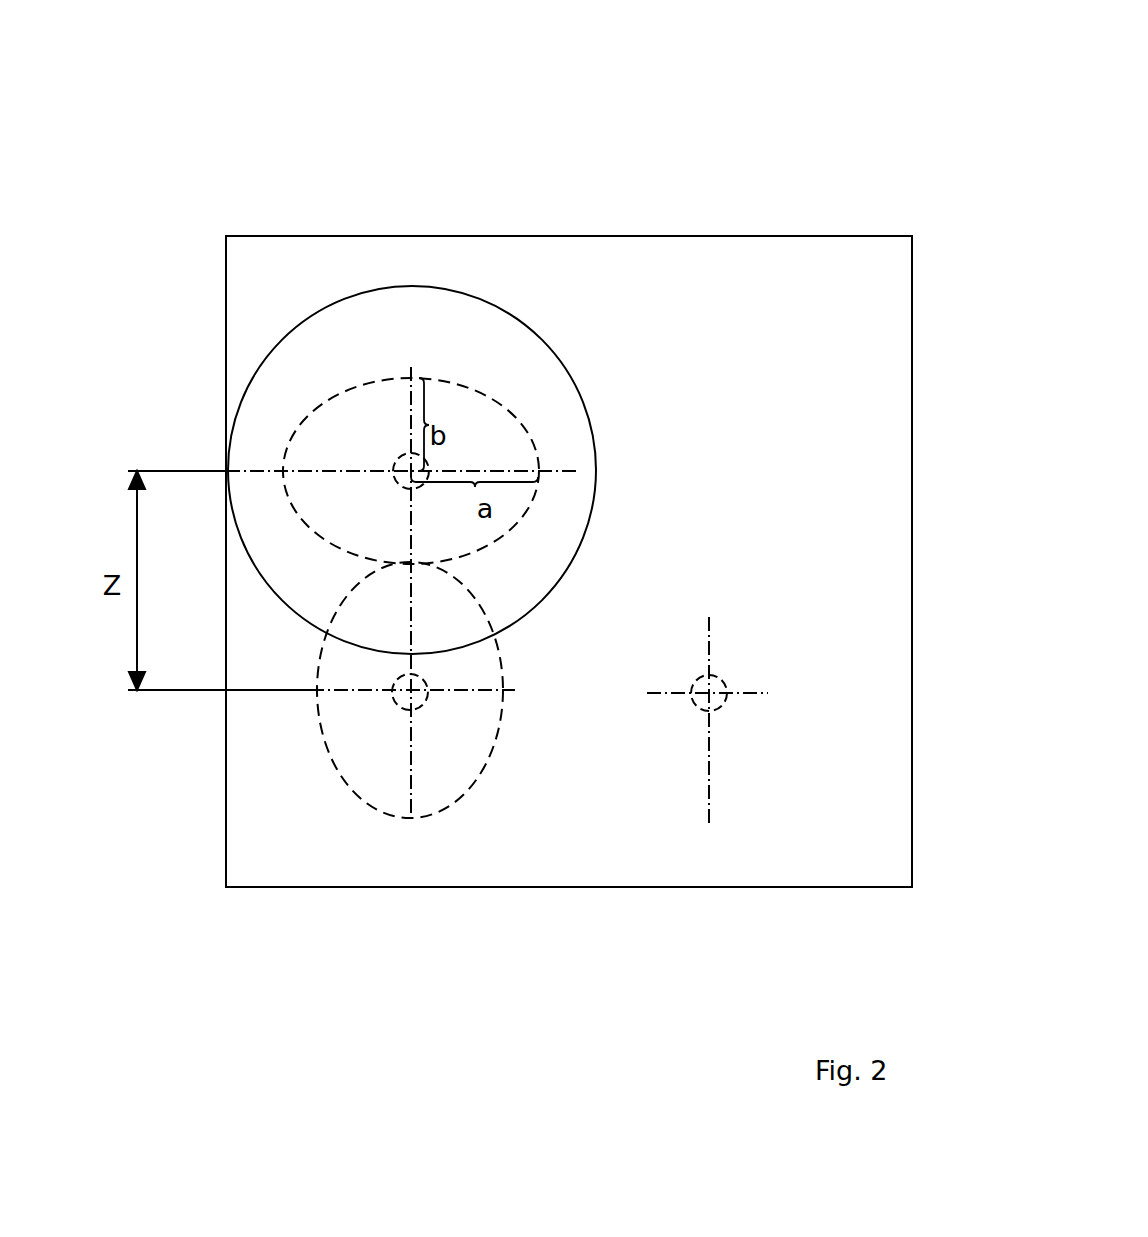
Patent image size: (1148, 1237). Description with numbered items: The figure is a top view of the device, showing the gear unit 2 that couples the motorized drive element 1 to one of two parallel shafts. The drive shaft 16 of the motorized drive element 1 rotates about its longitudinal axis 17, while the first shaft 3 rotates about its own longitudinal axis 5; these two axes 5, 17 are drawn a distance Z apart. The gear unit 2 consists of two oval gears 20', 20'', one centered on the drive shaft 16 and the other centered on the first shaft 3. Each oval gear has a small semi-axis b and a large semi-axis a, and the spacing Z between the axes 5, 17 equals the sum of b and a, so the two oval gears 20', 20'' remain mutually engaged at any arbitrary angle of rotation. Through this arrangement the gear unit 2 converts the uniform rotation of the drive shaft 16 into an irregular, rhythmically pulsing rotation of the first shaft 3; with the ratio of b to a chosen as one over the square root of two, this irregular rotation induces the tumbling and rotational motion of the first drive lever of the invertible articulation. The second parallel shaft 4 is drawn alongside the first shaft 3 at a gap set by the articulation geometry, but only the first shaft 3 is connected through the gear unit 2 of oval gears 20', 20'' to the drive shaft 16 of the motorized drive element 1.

The motorized drive element 1 is at (527, 377).
The gear unit 2 is at (327, 597).
The first shaft 3 is at (415, 702).
The second parallel shaft 4 is at (700, 708).
The longitudinal axis of the first shaft 5 is at (402, 697).
The drive shaft 16 is at (393, 470).
The longitudinal axis of the drive shaft 17 is at (409, 468).
The oval gear 20' is at (329, 369).
The oval gear 20'' is at (408, 787).